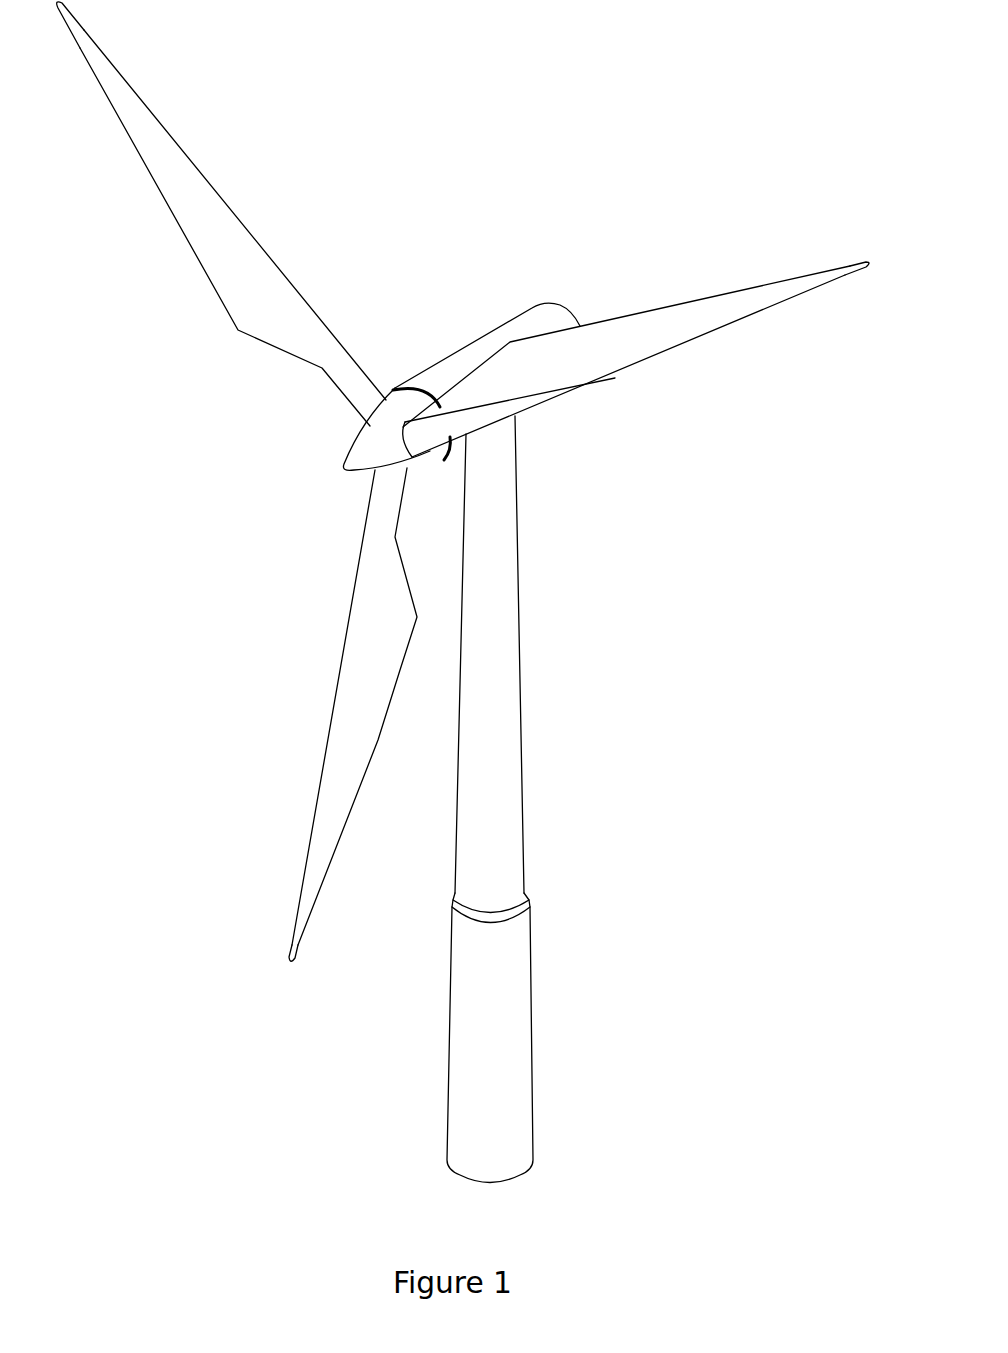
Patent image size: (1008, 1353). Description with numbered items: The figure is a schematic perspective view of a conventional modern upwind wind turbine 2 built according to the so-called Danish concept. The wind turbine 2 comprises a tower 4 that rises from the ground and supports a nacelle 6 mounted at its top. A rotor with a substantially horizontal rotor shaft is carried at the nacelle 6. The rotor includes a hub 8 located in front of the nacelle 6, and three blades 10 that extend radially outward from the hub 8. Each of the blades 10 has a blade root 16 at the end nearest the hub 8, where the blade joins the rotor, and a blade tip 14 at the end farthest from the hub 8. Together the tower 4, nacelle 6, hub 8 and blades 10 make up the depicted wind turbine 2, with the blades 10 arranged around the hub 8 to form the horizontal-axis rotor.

The wind turbine 2 is at (622, 740).
The tower 4 is at (508, 662).
The nacelle 6 is at (453, 365).
The hub 8 is at (360, 450).
The blades 10 is at (252, 302).
The blade tip 14 is at (97, 60).
The blade root 16 is at (368, 405).